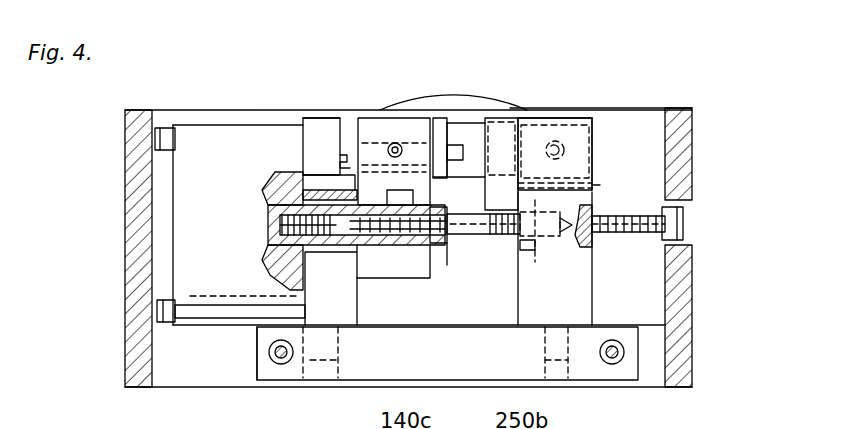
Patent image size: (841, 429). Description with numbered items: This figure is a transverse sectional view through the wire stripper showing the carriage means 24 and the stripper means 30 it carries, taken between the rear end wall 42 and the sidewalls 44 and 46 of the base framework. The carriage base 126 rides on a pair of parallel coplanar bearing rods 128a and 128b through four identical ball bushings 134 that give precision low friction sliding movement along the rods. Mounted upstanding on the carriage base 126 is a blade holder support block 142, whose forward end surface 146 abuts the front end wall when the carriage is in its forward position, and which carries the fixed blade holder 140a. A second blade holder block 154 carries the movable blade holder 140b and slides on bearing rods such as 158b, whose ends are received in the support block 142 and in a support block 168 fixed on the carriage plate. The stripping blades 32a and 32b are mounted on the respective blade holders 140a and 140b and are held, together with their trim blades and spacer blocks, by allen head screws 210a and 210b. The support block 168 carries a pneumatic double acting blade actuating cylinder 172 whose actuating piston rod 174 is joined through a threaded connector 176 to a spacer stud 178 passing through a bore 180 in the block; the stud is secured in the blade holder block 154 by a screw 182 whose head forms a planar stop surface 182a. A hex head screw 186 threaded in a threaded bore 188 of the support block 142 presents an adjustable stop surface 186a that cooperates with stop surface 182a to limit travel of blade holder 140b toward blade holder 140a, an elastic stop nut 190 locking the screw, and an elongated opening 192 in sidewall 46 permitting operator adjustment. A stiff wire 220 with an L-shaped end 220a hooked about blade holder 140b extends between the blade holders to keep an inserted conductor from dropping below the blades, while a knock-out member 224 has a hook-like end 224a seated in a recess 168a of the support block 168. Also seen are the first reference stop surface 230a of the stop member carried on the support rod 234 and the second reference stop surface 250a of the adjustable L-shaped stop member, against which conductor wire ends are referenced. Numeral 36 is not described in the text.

The carriage means 24 is at (250, 362).
The stripper means 30 is at (340, 112).
The stripping blade 32a is at (516, 116).
The stripping blade 32b is at (436, 116).
The housing 36 is at (610, 106).
The rear end wall 42 is at (180, 82).
The sidewall 44 is at (124, 262).
The sidewall 46 is at (692, 130).
The carriage base 126 is at (440, 384).
The bearing rod 128a is at (281, 364).
The bearing rod 128b is at (622, 364).
The ball bushing 134 is at (292, 360).
The blade holder 140a is at (565, 116).
The blade holder 140b is at (370, 116).
The blade holder support block 142 is at (586, 305).
The forward end surface 146 is at (590, 288).
The blade holder block 154 is at (385, 280).
The bearing rod 158b is at (448, 244).
The support block 168 is at (320, 116).
The recess 168a is at (340, 162).
The blade actuating cylinder 172 is at (205, 318).
The actuating piston rod 174 is at (270, 214).
The threaded connector 176 is at (278, 230).
The spacer stud 178 is at (331, 285).
The bore 180 is at (296, 264).
The screw 182 is at (428, 266).
The stop surface 182a is at (478, 214).
The hex head screw 186 is at (609, 238).
The stop surface 186a is at (500, 262).
The threaded bore 188 is at (585, 214).
The elastic stop nut 190 is at (592, 285).
The elongated opening 192 is at (693, 238).
The allen head screw 210a is at (565, 150).
The allen head screw 210b is at (396, 142).
The wire 220 is at (586, 182).
The L-shaped end 220a is at (334, 184).
The knock-out member 224 is at (455, 143).
The hook-like end 224a is at (345, 162).
The planar end surface 230a is at (524, 216).
The support rod 234 is at (524, 117).
The planar surface 250a is at (490, 108).